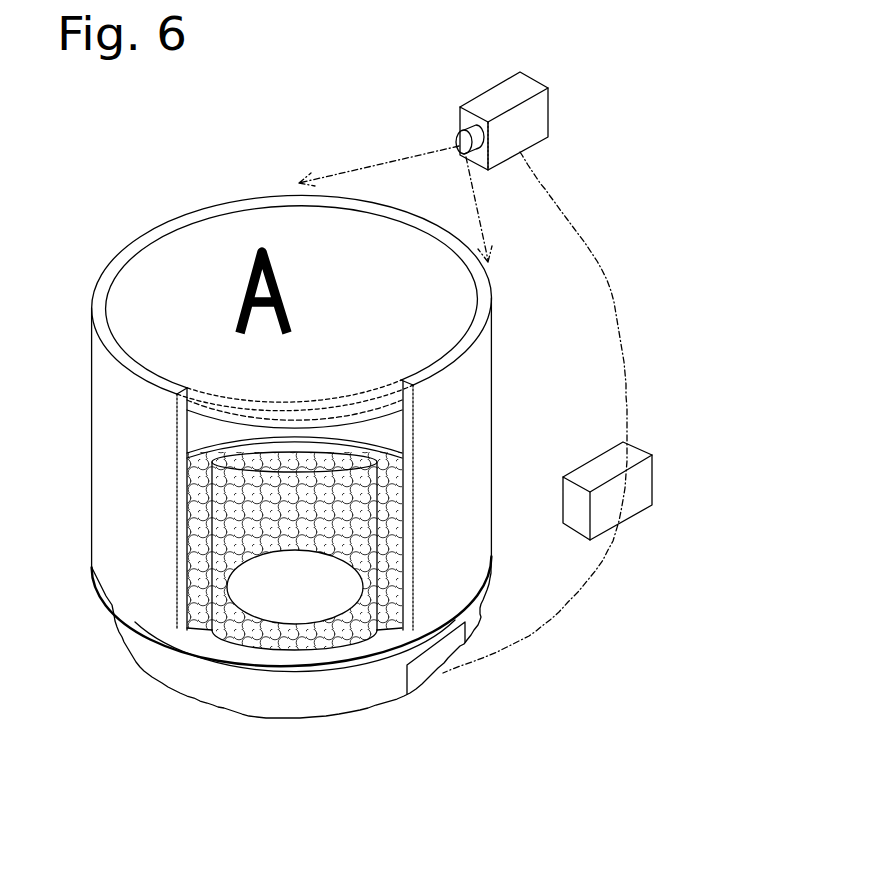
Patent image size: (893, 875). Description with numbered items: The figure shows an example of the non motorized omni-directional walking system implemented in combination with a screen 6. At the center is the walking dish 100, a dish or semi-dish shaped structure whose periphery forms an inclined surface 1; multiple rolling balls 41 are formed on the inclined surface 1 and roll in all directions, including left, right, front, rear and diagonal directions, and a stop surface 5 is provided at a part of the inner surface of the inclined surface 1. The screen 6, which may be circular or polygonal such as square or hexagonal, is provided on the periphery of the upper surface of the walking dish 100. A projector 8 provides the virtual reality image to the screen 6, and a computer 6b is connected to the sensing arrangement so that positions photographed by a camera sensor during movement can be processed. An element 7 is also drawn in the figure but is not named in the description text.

The drum 6 is at (445, 318).
The filter 1 is at (190, 490).
The filter body 41 is at (190, 538).
The perforated inner cylinder 7 is at (377, 500).
The hole 5 is at (297, 612).
The filter assembly 100 is at (200, 440).
The camera 8 is at (523, 88).
The sensor 6b is at (635, 492).